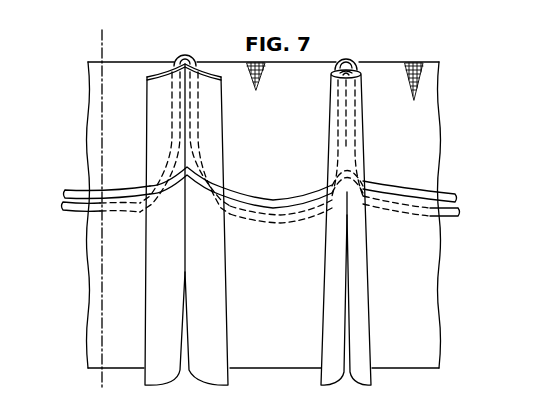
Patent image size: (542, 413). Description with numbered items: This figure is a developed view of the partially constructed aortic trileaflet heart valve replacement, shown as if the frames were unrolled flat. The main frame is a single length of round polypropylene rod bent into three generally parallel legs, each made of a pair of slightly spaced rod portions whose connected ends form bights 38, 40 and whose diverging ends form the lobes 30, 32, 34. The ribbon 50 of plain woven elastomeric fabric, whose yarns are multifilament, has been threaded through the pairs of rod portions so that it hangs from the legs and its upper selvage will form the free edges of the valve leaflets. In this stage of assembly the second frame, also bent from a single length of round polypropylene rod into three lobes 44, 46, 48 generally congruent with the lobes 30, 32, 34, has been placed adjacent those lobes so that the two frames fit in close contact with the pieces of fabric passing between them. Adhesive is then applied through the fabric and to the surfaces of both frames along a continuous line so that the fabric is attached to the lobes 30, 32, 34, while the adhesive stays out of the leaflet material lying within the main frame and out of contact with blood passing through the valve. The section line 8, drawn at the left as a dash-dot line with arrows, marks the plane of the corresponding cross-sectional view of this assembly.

The section line 8 is at (90, 379).
The lobe 30 is at (78, 189).
The lobe 32 is at (258, 192).
The lobe 34 is at (396, 190).
The bight 38 is at (178, 55).
The bight 40 is at (352, 55).
The lobe 44 is at (72, 210).
The lobe 46 is at (284, 222).
The lobe 48 is at (424, 221).
The ribbon 50 is at (283, 119).